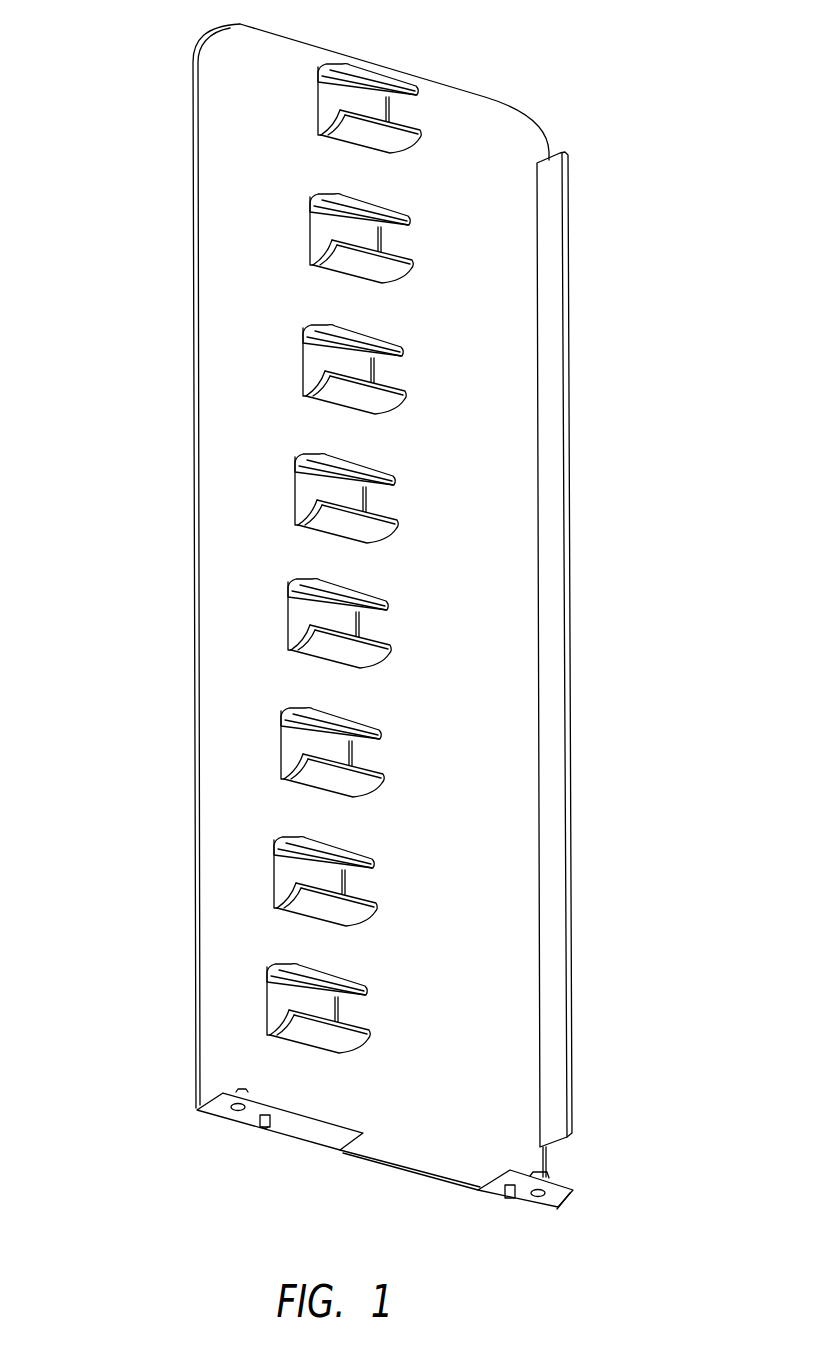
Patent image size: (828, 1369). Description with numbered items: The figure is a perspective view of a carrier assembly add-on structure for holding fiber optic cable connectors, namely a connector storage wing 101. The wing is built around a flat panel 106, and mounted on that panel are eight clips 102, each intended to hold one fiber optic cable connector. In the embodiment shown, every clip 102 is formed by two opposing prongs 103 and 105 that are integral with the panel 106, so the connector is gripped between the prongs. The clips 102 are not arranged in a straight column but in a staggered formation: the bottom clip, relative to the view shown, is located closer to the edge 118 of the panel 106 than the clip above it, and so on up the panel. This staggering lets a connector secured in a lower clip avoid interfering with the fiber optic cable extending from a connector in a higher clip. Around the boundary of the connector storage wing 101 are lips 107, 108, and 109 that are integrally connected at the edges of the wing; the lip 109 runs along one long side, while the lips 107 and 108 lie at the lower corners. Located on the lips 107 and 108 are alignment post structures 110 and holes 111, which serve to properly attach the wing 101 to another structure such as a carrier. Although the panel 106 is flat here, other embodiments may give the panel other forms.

The connector storage wing 101 is at (527, 110).
The clips 102 is at (318, 108).
The prong 103 is at (300, 456).
The prong 105 is at (303, 528).
The panel 106 is at (450, 1059).
The lip 107 is at (527, 1198).
The lip 108 is at (218, 1113).
The lip 109 is at (572, 877).
The alignment post structures 110 is at (270, 1127).
The holes 111 is at (540, 1198).
The edge 118 is at (195, 707).